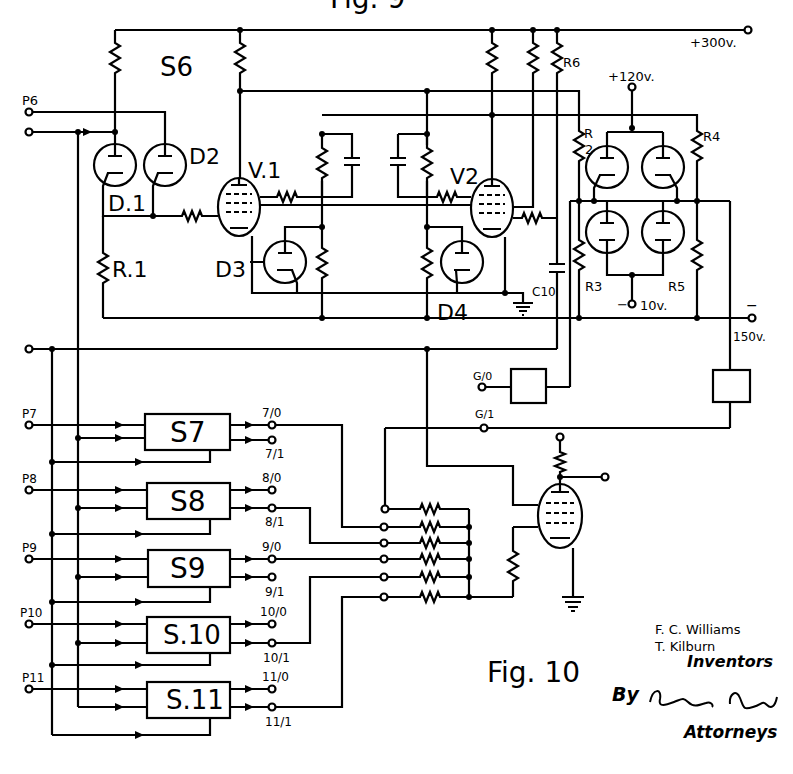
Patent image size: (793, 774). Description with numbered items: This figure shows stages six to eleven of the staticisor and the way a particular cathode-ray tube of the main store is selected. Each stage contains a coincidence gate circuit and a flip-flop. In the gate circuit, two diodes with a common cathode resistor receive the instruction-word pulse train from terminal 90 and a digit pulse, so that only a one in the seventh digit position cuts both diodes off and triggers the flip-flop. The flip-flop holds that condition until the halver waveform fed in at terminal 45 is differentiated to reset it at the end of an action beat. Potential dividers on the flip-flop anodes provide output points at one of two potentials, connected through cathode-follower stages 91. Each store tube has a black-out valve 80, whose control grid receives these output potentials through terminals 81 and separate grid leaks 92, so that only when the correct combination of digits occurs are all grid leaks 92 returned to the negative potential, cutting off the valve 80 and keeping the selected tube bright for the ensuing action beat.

The terminal 45 is at (292, 337).
The black-out valve 80 is at (582, 505).
The terminals 81 is at (388, 506).
The terminal 90 is at (70, 149).
The cathode-follower stages 91 is at (545, 400).
The grid leaks 92 is at (437, 509).